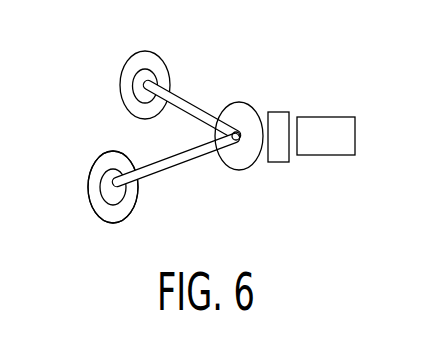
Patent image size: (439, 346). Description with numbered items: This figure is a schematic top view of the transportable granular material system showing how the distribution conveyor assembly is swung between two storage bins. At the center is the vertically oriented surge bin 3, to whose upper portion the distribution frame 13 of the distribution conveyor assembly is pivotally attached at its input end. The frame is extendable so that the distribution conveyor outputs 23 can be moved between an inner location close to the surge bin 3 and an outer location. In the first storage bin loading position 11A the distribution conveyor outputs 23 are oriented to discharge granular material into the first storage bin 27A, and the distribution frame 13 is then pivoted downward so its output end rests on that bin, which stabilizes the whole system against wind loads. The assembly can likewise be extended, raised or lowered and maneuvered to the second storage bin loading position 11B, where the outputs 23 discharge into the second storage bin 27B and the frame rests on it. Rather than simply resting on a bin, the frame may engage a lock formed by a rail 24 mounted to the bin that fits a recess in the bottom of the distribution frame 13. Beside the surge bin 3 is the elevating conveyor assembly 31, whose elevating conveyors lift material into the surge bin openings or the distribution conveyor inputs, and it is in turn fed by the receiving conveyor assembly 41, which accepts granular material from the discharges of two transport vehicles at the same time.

The surge bin 3 is at (258, 108).
The first storage bin loading position 11A is at (187, 98).
The second storage bin loading position 11B is at (177, 166).
The distribution frame 13 is at (155, 163).
The distribution conveyor outputs 23 is at (135, 87).
The rail 24 is at (98, 165).
The first storage bin 27A is at (145, 50).
The second storage bin 27B is at (88, 200).
The elevating conveyor assembly 31 is at (278, 163).
The receiving conveyor assembly 41 is at (326, 117).